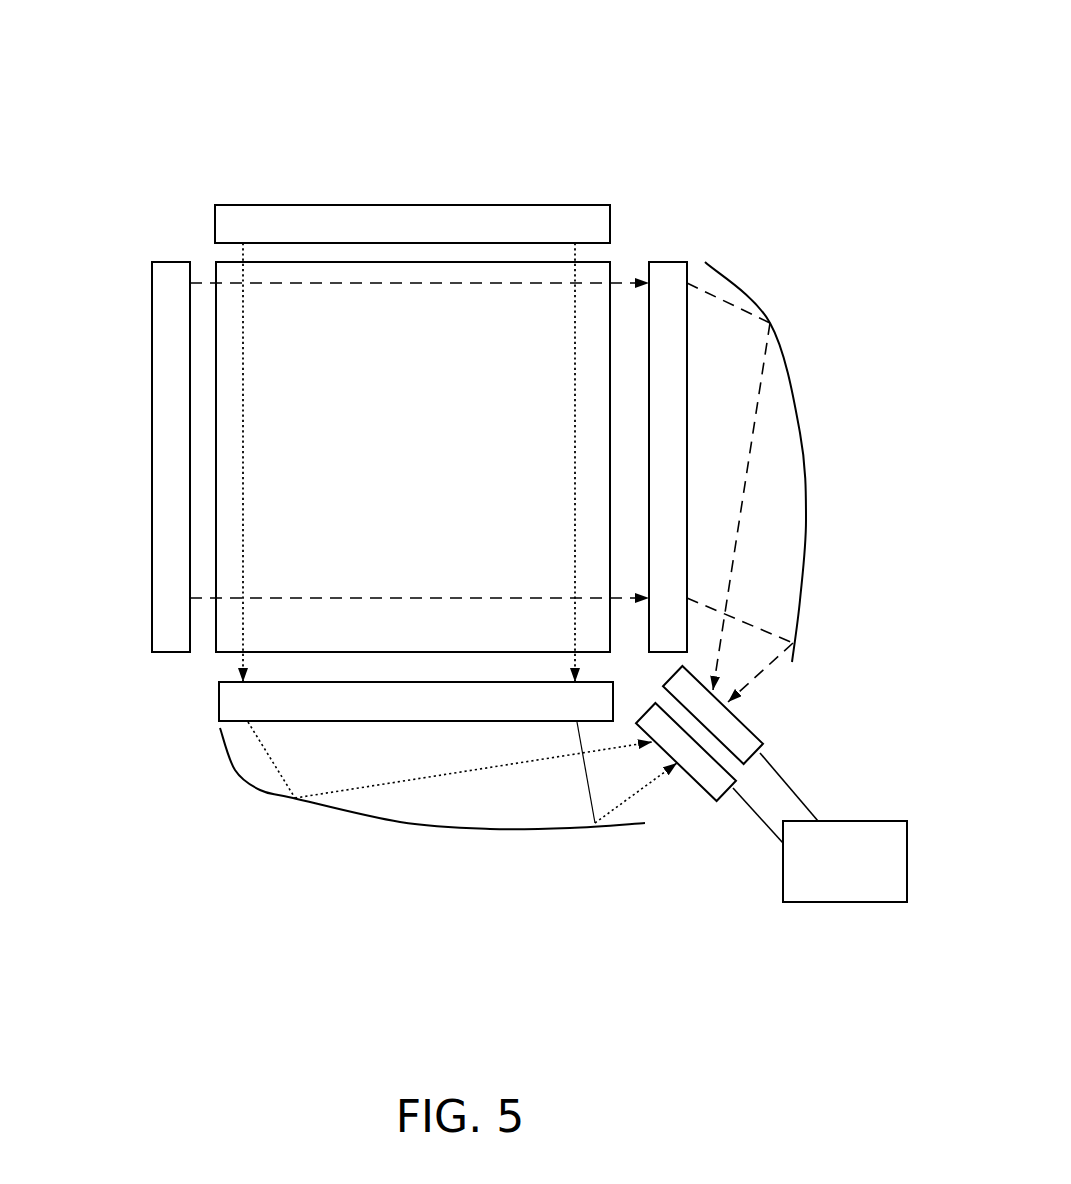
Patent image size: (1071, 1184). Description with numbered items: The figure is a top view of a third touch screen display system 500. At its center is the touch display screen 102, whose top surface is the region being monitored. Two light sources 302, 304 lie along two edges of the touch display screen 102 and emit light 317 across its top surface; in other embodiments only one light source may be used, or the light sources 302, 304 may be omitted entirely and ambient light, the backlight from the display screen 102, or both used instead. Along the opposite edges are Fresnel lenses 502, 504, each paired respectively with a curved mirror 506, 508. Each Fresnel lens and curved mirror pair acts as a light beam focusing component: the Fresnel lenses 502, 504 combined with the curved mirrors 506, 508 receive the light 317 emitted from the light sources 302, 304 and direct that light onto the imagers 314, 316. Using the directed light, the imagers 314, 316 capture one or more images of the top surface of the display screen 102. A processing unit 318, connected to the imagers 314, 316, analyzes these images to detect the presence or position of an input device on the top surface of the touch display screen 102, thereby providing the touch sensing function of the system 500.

The touch screen display system 500 is at (767, 93).
The light source 302 is at (413, 205).
The light source 304 is at (152, 458).
The touch display screen 102 is at (383, 516).
The Fresnel lens 502 is at (668, 262).
The Fresnel lens 504 is at (219, 692).
The light 317 is at (245, 383).
The curved mirror 506 is at (800, 433).
The curved mirror 508 is at (378, 820).
The imager 314 is at (767, 742).
The imager 316 is at (707, 793).
The processing unit 318 is at (873, 876).